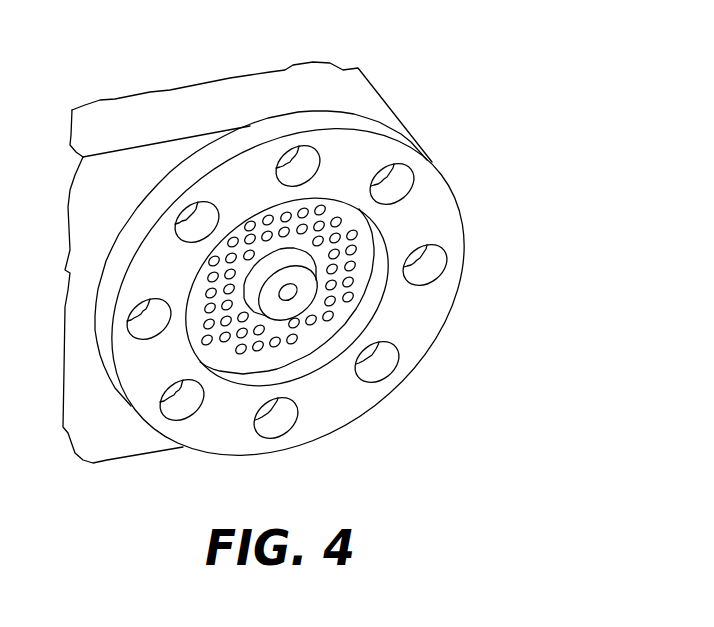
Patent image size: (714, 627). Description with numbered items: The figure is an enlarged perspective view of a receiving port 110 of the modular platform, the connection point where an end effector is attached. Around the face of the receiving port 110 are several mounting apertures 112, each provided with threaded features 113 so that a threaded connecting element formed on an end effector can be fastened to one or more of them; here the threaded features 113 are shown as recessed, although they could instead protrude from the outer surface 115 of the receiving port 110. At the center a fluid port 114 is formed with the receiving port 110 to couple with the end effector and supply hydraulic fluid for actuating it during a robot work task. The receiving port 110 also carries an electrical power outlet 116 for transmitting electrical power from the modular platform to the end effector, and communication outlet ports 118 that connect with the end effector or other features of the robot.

The receiving port 110 is at (455, 121).
The mounting apertures 112 is at (433, 252).
The threaded features 113 is at (410, 296).
The fluid port 114 is at (282, 306).
The outer surface 115 is at (145, 377).
The electrical power outlet 116 is at (328, 208).
The communication outlet ports 118 is at (352, 252).